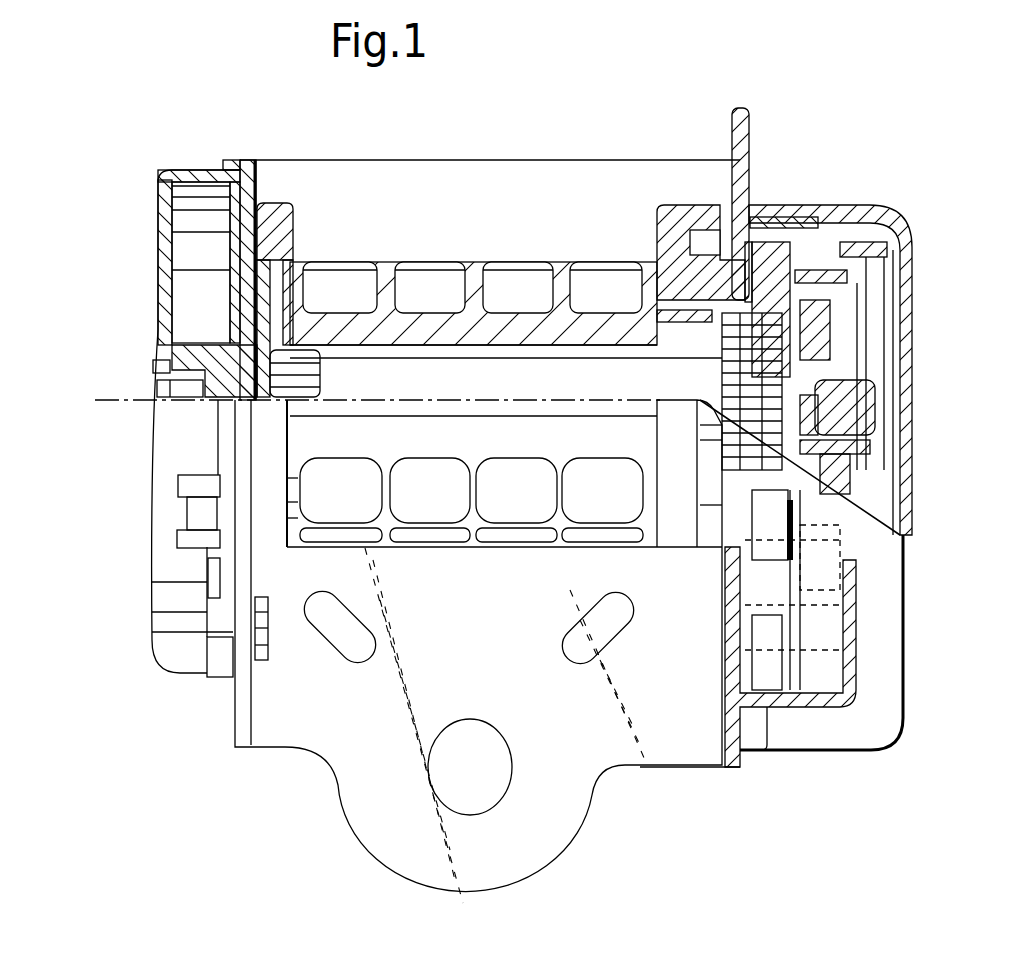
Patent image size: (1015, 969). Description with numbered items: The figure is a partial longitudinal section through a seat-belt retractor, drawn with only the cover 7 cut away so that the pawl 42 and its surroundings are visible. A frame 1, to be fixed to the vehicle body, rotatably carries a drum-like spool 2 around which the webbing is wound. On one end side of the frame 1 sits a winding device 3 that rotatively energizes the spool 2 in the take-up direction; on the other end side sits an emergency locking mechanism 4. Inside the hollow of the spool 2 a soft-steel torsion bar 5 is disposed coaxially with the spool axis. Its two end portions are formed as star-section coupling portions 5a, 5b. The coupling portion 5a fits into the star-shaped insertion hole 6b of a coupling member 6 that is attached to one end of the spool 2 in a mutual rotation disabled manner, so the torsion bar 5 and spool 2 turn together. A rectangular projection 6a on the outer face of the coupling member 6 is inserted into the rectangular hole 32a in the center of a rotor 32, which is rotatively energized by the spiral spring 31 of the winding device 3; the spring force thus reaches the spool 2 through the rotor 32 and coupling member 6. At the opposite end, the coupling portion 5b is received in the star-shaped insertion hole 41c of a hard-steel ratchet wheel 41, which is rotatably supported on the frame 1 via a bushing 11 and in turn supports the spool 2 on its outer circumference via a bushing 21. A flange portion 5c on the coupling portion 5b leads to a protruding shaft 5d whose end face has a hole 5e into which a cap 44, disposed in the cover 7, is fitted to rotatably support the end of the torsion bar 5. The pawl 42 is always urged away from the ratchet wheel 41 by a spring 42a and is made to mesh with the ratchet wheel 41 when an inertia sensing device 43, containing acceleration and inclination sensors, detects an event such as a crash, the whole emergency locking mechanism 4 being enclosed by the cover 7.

The frame 1 is at (752, 140).
The spool 2 is at (372, 318).
The winding device 3 is at (155, 150).
The emergency locking mechanism 4 is at (873, 185).
The torsion bar 5 is at (522, 385).
The coupling portion 5a is at (387, 272).
The coupling portion 5b is at (650, 318).
The flange portion 5c is at (885, 240).
The protruding shaft 5d is at (907, 427).
The hole 5e is at (907, 343).
The coupling member 6 is at (290, 240).
The projection 6a is at (160, 368).
The insertion hole 6b is at (320, 320).
The cover 7 is at (907, 480).
The bushing 11 is at (720, 225).
The bushing 21 is at (678, 322).
The spiral spring 31 is at (200, 190).
The rotor 32 is at (210, 343).
The hole 32a is at (200, 373).
The ratchet wheel 41 is at (797, 215).
The insertion hole 41c is at (777, 250).
The pawl 42 is at (768, 673).
The spring 42a is at (840, 613).
The inertia sensing device 43 is at (827, 533).
The cap 44 is at (913, 397).